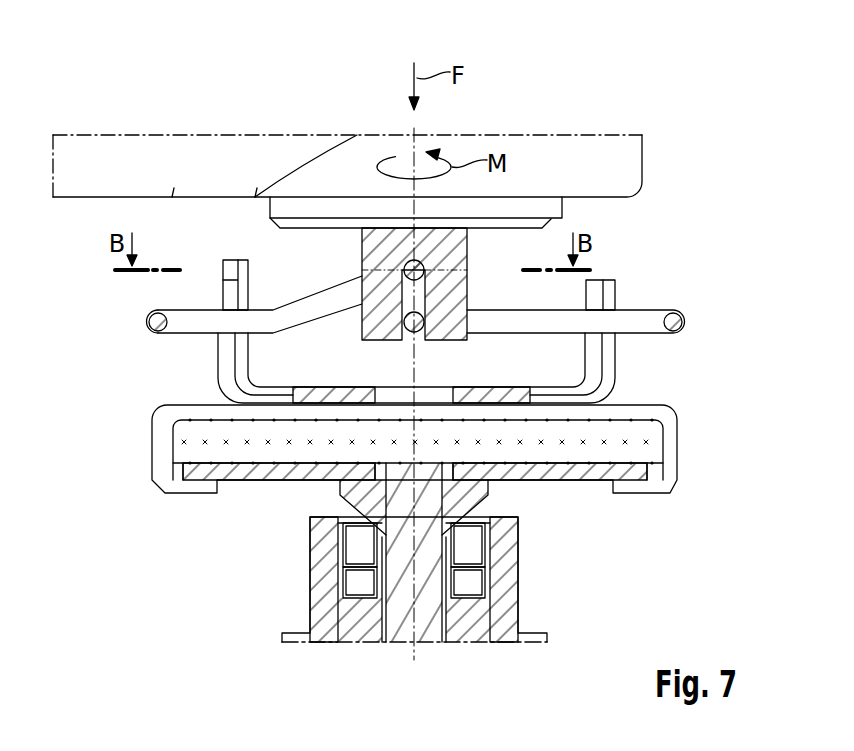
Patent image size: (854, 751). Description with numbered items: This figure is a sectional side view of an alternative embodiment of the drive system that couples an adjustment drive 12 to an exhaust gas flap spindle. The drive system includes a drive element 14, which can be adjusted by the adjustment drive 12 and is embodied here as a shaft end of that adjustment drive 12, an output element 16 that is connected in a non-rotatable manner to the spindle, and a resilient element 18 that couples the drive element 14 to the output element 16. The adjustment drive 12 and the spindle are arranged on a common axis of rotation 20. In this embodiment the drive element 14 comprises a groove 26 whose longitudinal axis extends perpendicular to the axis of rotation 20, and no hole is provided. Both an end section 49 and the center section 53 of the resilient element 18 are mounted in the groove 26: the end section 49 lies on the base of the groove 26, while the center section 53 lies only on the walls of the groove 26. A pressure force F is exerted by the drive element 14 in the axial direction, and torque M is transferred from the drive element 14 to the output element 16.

The adjustment drive 12 is at (630, 158).
The drive element 14 is at (256, 244).
The output element 16 is at (157, 371).
The resilient element 18 is at (152, 318).
The axis of rotation 20 is at (413, 607).
The groove 26 is at (420, 343).
The end section 49 is at (425, 267).
The center section 53 is at (405, 323).